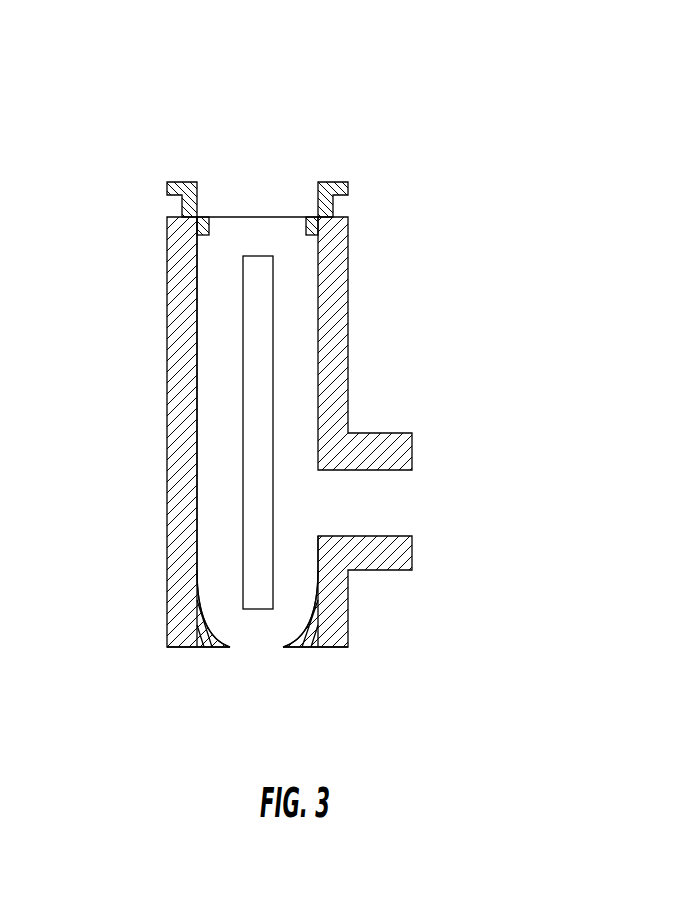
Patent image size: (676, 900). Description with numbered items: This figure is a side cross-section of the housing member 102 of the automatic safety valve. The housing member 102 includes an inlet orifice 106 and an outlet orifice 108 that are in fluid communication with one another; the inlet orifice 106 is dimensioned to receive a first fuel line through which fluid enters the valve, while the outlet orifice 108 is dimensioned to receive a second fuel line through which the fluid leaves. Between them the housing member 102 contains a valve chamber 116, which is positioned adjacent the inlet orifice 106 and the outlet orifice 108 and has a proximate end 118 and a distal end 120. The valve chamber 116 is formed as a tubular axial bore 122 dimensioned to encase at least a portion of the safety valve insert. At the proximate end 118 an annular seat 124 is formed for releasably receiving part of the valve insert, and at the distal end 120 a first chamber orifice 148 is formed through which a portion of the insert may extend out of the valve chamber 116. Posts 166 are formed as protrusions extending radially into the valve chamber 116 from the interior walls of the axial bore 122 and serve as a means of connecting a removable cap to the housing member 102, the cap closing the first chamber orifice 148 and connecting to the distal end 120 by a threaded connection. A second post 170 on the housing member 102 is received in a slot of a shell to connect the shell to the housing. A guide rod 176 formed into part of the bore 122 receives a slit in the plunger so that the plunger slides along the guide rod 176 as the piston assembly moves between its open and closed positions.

The housing member 102 is at (295, 377).
The inlet orifice 106 is at (310, 413).
The outlet orifice 108 is at (261, 629).
The valve chamber 116 is at (214, 398).
The proximate end 118 is at (292, 607).
The distal end 120 is at (259, 235).
The tubular axial bore 122 is at (218, 320).
The annular seat 124 is at (203, 627).
The first chamber orifice 148 is at (236, 188).
The posts 166 is at (315, 229).
The second post 170 is at (347, 188).
The guide rod 176 is at (255, 376).